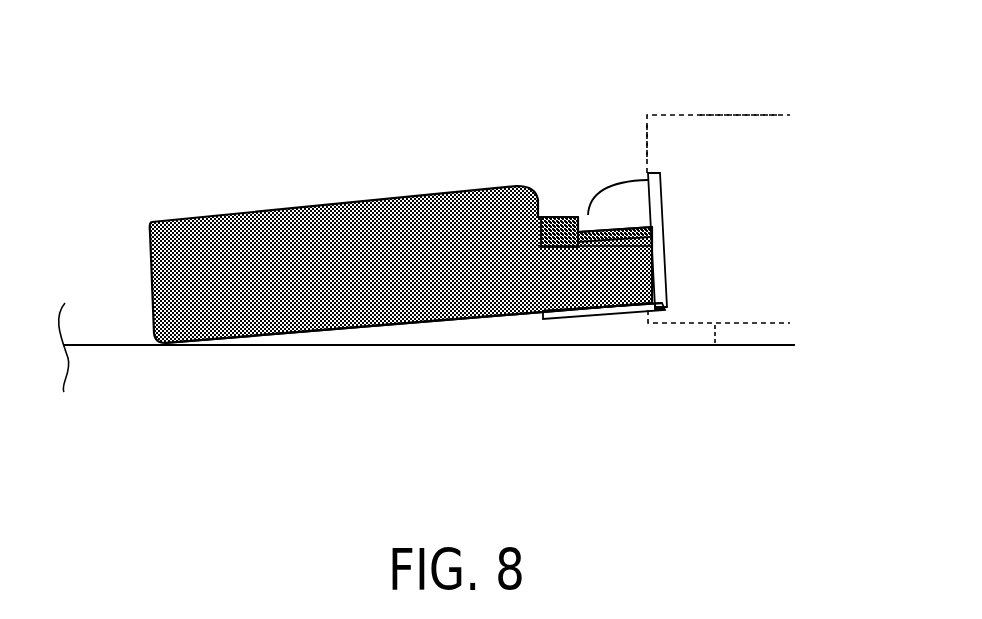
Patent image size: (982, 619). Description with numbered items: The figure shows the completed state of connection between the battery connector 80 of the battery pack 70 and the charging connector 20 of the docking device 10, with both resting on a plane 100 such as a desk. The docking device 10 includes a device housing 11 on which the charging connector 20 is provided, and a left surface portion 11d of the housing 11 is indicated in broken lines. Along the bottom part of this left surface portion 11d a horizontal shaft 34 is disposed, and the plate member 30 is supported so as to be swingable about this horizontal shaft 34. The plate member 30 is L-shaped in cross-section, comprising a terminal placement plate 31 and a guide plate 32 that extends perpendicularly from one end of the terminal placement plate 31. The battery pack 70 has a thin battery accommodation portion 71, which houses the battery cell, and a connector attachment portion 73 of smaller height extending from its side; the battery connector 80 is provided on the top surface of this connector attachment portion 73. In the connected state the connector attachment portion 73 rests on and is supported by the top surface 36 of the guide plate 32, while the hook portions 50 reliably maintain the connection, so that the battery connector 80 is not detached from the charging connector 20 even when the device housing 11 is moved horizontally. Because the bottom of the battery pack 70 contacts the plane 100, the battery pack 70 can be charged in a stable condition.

The docking device 10 is at (731, 101).
The docking device housing 11 is at (697, 115).
The left surface portion 11d is at (647, 143).
The charging connector 20 is at (684, 252).
The plate member 30 is at (702, 453).
The terminal placement plate 31 is at (666, 288).
The guide plate 32 is at (625, 317).
The horizontal shaft 34 is at (664, 303).
The top surface of the guide plate 36 is at (583, 310).
The hook portion 50 is at (590, 213).
The battery pack 70 is at (380, 200).
The battery accommodation portion 71 is at (377, 327).
The connector attachment portion 73 is at (550, 305).
The battery connector 80 is at (560, 217).
The plane 100 is at (107, 342).